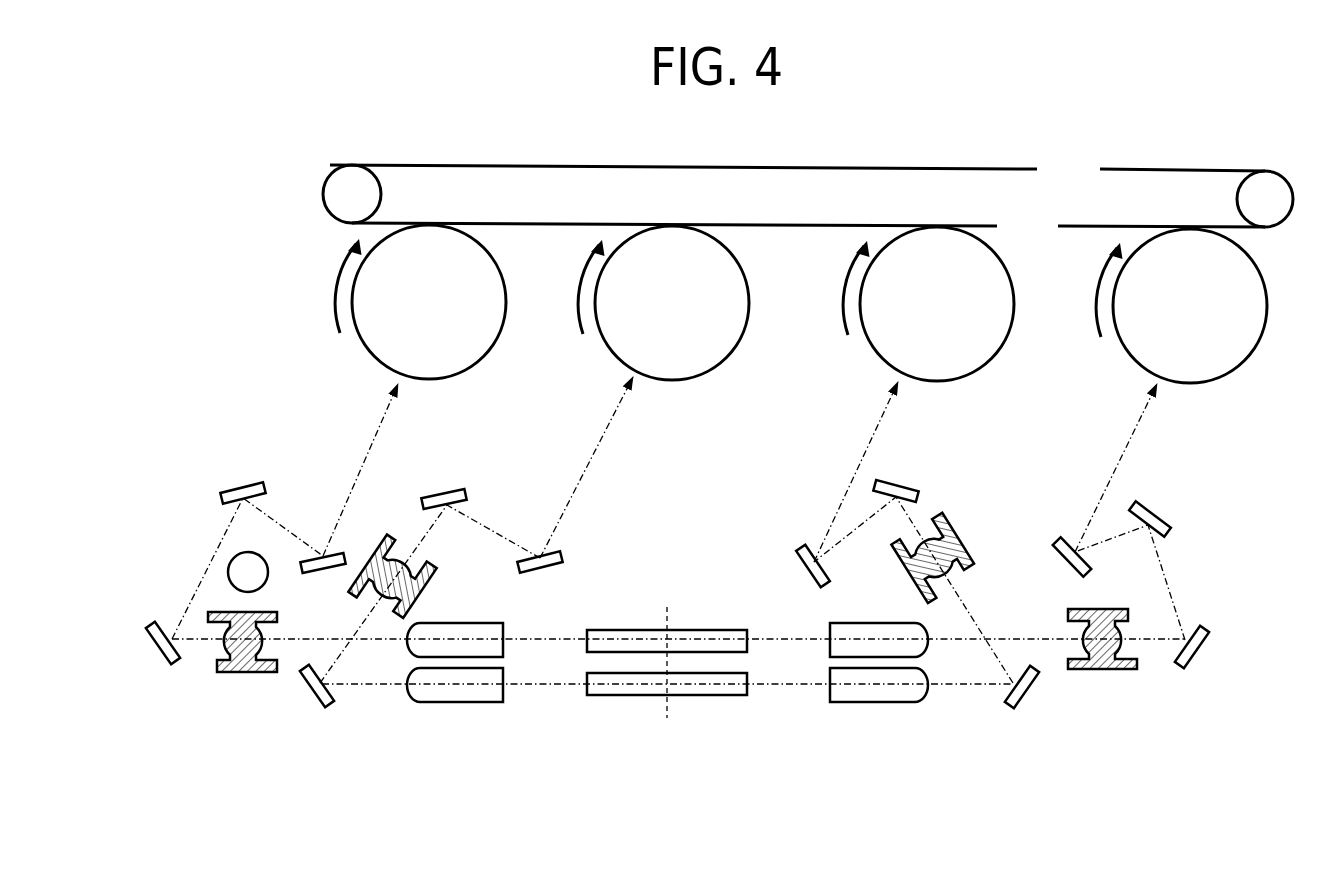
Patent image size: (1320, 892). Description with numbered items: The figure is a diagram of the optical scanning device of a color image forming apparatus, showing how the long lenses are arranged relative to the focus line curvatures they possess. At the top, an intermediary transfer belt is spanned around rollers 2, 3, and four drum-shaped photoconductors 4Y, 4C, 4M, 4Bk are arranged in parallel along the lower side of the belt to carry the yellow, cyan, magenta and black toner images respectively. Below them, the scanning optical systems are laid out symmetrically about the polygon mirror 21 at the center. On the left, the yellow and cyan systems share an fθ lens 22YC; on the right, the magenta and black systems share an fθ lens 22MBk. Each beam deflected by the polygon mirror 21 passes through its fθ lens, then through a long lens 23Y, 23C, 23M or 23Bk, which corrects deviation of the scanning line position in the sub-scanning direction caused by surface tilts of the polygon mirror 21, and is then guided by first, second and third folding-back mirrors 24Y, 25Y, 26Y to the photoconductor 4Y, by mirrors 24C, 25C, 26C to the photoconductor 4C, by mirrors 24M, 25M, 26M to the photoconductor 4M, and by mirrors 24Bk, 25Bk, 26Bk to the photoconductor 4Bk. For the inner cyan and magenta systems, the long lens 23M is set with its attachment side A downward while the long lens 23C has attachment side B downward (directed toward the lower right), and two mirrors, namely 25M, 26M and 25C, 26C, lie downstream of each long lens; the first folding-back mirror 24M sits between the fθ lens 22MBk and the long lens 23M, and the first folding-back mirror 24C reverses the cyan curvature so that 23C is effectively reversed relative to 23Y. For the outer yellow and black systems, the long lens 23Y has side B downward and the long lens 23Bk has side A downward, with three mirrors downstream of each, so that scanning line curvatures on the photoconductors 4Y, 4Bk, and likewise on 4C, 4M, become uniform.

The roller 2 is at (348, 181).
The roller 3 is at (1280, 190).
The photoconductor 4Y is at (491, 380).
The photoconductor 4C is at (733, 380).
The photoconductor 4M is at (1000, 383).
The photoconductor 4Bk is at (1253, 384).
The polygon mirror 21 is at (718, 698).
The fθ lens 22YC is at (474, 703).
The fθ lens 22MBk is at (890, 703).
The long lens 23Y is at (244, 675).
The long lens 23C is at (430, 592).
The long lens 23M is at (970, 520).
The long lens 23Bk is at (1107, 675).
The first folding-back mirror 24Y is at (153, 622).
The first folding-back mirror 24C is at (320, 710).
The first folding-back mirror 24M is at (1025, 712).
The first folding-back mirror 24Bk is at (1207, 655).
The second folding-back mirror 25Y is at (244, 485).
The second folding-back mirror 25C is at (447, 490).
The second folding-back mirror 25M is at (900, 482).
The second folding-back mirror 25Bk is at (1155, 505).
The third folding-back mirror 26Y is at (322, 574).
The third folding-back mirror 26C is at (566, 566).
The third folding-back mirror 26M is at (801, 547).
The third folding-back mirror 26Bk is at (1065, 537).